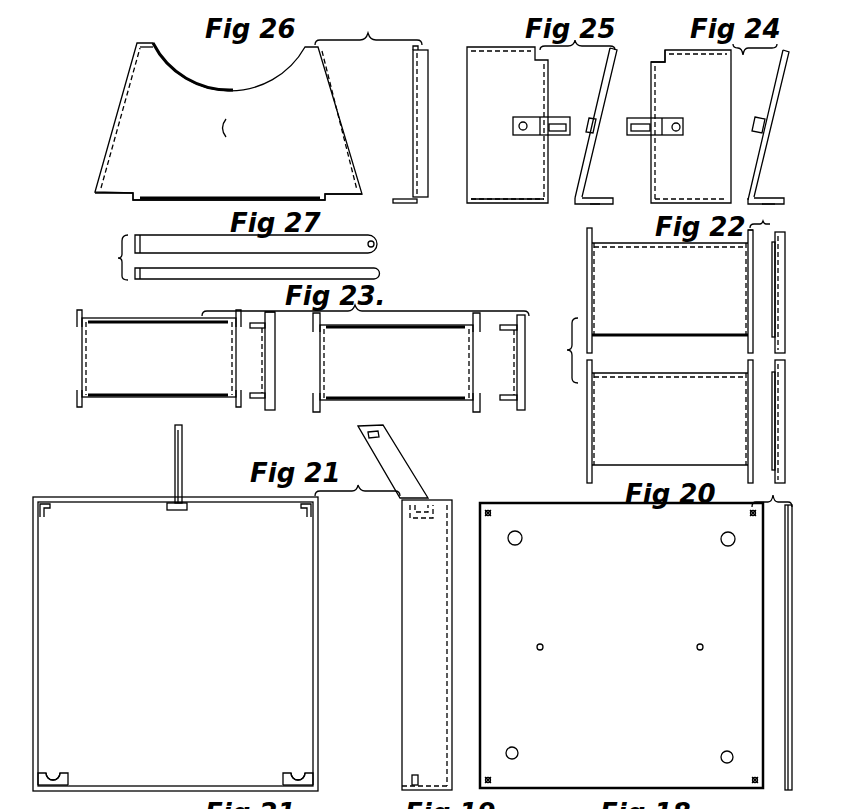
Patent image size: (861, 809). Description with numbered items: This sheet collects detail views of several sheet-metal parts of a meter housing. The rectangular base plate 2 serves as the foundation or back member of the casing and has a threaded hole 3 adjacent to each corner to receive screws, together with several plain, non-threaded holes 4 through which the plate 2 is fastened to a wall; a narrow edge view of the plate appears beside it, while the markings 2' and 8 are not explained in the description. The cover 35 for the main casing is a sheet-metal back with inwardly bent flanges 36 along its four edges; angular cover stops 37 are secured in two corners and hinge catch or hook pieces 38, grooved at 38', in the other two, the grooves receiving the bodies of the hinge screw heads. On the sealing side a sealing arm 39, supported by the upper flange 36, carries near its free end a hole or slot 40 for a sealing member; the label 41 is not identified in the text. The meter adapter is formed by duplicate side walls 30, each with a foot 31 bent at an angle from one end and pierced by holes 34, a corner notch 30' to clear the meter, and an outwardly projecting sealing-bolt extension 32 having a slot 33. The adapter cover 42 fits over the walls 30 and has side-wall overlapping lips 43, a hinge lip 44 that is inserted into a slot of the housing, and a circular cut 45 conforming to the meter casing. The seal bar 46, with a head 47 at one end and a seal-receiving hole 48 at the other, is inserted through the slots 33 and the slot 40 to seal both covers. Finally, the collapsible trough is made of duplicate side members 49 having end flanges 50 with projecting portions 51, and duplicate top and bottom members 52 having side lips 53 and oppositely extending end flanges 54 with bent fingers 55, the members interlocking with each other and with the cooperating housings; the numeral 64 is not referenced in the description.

In FIG. 20, the plate 2 is at (621, 645).
In FIG. 25, the plate 2' is at (507, 220).
In FIG. 20, the threaded hole 3 is at (491, 511).
In FIG. 20, the plain hole 4 is at (516, 545).
In FIG. 20, the strip 8 is at (788, 657).
In FIG. 25, the side wall 30 is at (507, 125).
In FIG. 24, the side wall 30 is at (731, 126).
In FIG. 24, the notch 30' is at (648, 47).
In FIG. 25, the foot 31 is at (598, 200).
In FIG. 24, the foot 31 is at (770, 200).
In FIG. 25, the sealing bolt holding extension 32 is at (535, 137).
In FIG. 24, the sealing bolt holding extension 32 is at (662, 137).
In FIG. 25, the slot 33 is at (557, 120).
In FIG. 24, the slot 33 is at (640, 122).
In FIG. 25, the hole 34 is at (591, 204).
In FIG. 24, the hole 34 is at (770, 204).
In FIG. 22, the hole 34 is at (767, 218).
In FIG. 21, the cover 35 is at (175, 644).
In FIG. 21, the flange 36 is at (205, 501).
In FIG. 21, the cover stop 37 is at (50, 509).
In FIG. 21, the hinge catch piece 38 is at (231, 768).
In FIG. 21, the groove 38' is at (195, 789).
In FIG. 21, the sealing arm 39 is at (183, 453).
In FIG. 21, the slot 40 is at (367, 436).
In FIG. 21, the notch 41 is at (47, 770).
In FIG. 26, the cover 42 is at (234, 127).
In FIG. 26, the side wall overlapping lip 43 is at (122, 107).
In FIG. 26, the hinge lip 44 is at (135, 203).
In FIG. 26, the circular cut 45 is at (211, 72).
In FIG. 27, the seal bar 46 is at (188, 243).
In FIG. 27, the head 47 is at (137, 280).
In FIG. 27, the seal receiving hole 48 is at (376, 243).
In FIG. 22, the side member 49 is at (670, 354).
In FIG. 22, the flange 50 is at (588, 278).
In FIG. 22, the projecting portion 51 is at (587, 236).
In FIG. 23, the top and bottom member 52 is at (277, 359).
In FIG. 23, the lip 53 is at (420, 323).
In FIG. 23, the end flange 54 is at (246, 368).
In FIG. 23, the bent finger 55 is at (238, 318).
In FIG. 23, the lip 64 is at (319, 358).